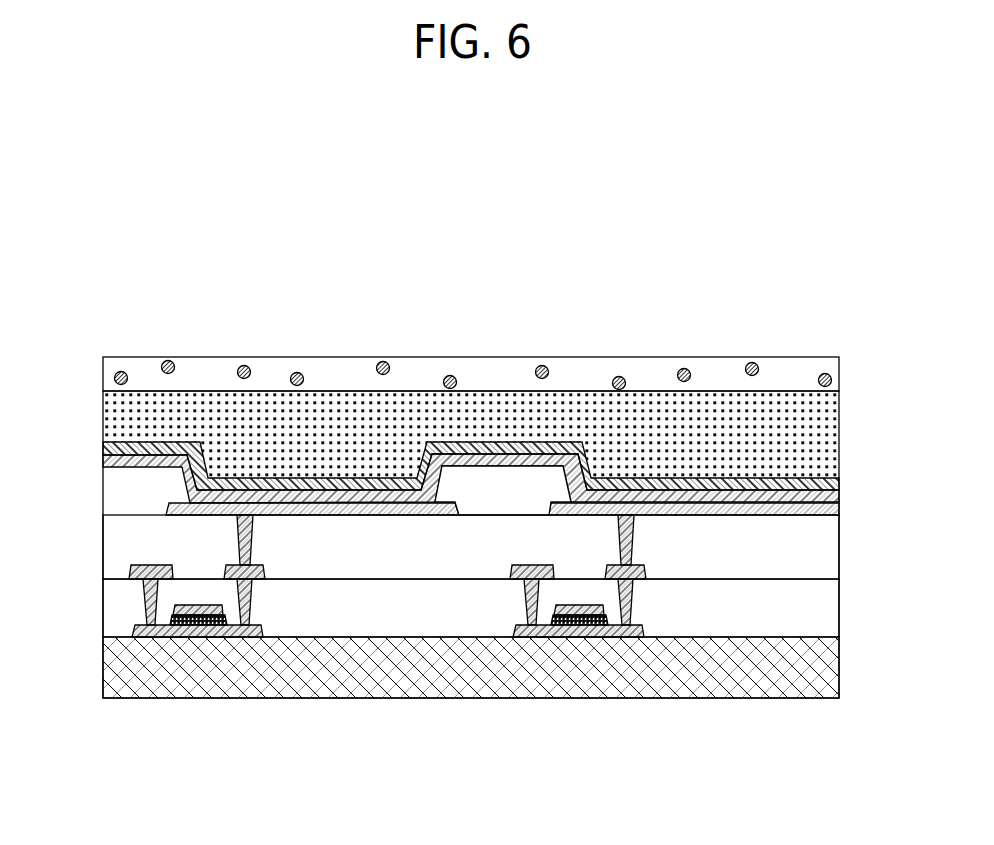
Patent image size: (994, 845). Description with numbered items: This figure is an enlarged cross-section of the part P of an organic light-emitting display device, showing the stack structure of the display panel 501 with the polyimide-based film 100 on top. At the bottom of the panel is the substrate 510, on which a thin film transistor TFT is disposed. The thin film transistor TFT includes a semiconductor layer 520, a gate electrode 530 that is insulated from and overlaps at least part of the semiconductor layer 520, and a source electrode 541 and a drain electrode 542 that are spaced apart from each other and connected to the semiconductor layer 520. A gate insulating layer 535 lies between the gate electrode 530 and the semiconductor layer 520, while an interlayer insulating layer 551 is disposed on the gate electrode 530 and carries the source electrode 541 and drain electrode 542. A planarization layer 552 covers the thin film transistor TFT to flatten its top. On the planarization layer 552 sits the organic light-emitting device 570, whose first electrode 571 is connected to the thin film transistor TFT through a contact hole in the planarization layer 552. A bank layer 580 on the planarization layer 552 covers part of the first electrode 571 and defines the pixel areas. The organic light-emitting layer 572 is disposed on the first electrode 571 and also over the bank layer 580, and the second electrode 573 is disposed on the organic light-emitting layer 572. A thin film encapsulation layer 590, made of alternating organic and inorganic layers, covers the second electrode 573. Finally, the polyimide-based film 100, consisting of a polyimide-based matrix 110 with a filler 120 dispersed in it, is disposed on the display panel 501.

The part P is at (131, 326).
The polyimide-based film 100 is at (697, 281).
The polyimide-based matrix 110 is at (595, 375).
The filler 120 is at (684, 373).
The display panel 501 is at (92, 393).
The substrate 510 is at (821, 666).
The semiconductor layer 520 is at (187, 632).
The gate electrode 530 is at (205, 610).
The gate insulating layer 535 is at (587, 618).
The source electrode 541 is at (152, 580).
The drain electrode 542 is at (242, 580).
The interlayer insulating layer 551 is at (821, 605).
The planarization layer 552 is at (821, 547).
The organic light-emitting device 570 is at (370, 281).
The first electrode 571 is at (228, 507).
The organic light-emitting layer 572 is at (288, 497).
The second electrode 573 is at (345, 487).
The bank layer 580 is at (497, 490).
The thin film encapsulation layer 590 is at (821, 433).
The thin film transistor TFT is at (266, 762).